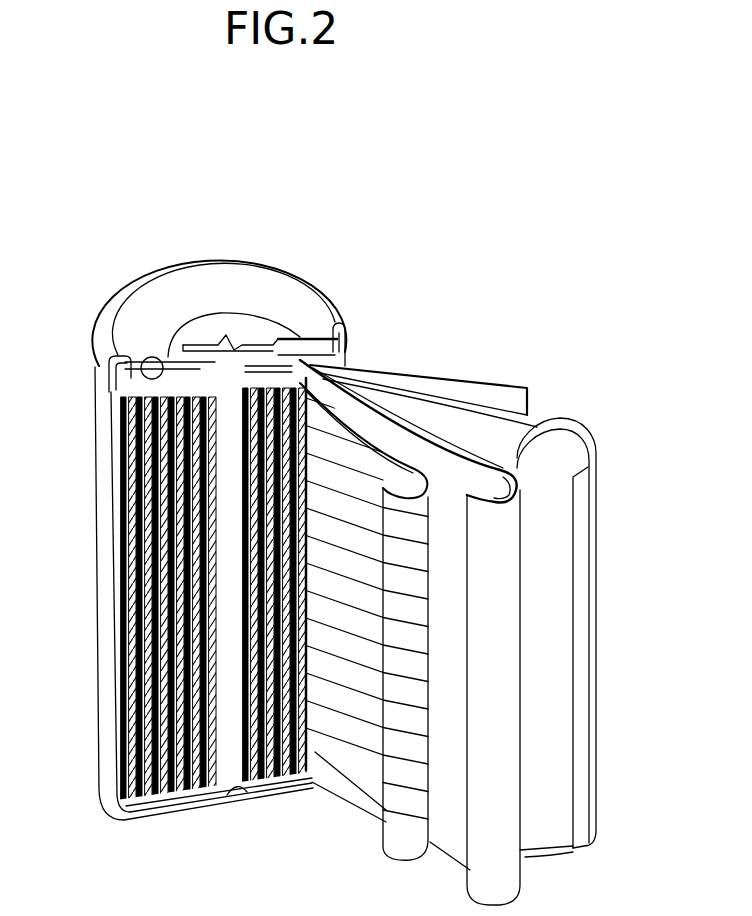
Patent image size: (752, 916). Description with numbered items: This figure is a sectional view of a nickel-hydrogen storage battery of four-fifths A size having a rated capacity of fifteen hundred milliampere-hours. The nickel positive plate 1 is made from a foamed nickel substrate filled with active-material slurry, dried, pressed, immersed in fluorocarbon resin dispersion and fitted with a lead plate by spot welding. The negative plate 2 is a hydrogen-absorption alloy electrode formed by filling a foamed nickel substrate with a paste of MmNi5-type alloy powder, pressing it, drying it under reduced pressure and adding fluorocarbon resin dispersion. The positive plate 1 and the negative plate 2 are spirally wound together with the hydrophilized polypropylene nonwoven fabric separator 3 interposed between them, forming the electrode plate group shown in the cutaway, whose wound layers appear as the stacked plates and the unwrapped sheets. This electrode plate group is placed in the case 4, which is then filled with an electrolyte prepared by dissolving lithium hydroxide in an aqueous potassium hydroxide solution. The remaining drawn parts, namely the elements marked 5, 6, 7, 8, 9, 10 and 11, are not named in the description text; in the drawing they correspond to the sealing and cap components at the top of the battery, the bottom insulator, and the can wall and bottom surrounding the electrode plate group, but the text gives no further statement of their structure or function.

The nickel positive plate 1 is at (410, 798).
The negative plate 2 is at (343, 345).
The separator 3 is at (595, 503).
The case 4 is at (593, 578).
The separator 5 is at (497, 463).
The bottom insulating plate 6 is at (158, 808).
The electrode plate stack 7 is at (128, 398).
The battery can 8 is at (118, 655).
The gasket 9 is at (113, 373).
The current collecting lead 10 is at (155, 365).
The safety vent plate 11 is at (192, 326).